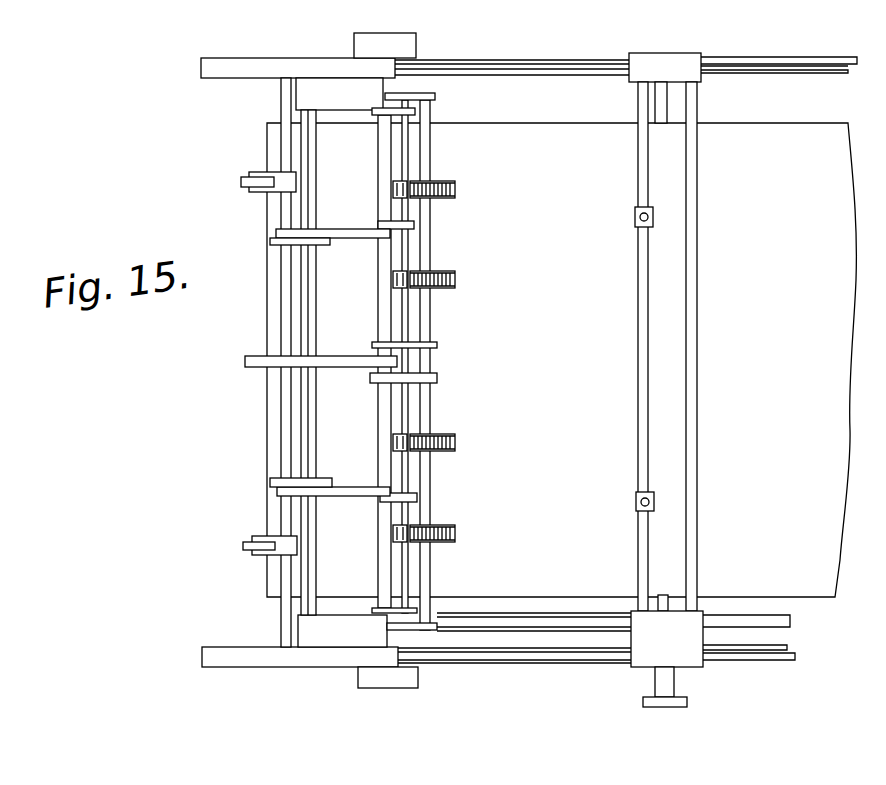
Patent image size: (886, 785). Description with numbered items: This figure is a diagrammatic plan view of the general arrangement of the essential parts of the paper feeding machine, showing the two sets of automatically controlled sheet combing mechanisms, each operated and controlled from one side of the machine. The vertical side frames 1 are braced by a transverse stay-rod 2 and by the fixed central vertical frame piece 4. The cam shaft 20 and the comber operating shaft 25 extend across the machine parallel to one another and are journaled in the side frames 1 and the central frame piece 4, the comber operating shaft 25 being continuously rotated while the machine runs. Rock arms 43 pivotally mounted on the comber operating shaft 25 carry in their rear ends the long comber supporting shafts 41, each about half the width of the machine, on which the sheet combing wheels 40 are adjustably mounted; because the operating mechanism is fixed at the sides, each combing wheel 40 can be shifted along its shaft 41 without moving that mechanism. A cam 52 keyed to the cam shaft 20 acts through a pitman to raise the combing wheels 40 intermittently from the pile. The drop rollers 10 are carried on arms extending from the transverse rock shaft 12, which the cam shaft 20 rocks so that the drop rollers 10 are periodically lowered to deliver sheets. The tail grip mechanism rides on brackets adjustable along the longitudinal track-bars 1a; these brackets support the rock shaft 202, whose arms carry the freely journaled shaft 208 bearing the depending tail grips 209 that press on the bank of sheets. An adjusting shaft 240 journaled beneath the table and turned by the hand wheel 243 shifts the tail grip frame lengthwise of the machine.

The vertical side frames 1 is at (238, 70).
The longitudinal track-bars 1a is at (626, 360).
The transverse stay-rod 2 is at (862, 436).
The fixed central vertical frame piece 4 is at (260, 363).
The drop rollers 10 is at (248, 186).
The transverse rock shaft 12 is at (288, 433).
The cam shaft 20 is at (310, 412).
The comber operating shaft 25 is at (385, 280).
The sheet combing wheels 40 is at (453, 192).
The comber supporting shafts 41 is at (427, 155).
The rock arms 43 is at (417, 98).
The cam 52 is at (318, 240).
The rock shaft 202 is at (697, 455).
The freely journaled shaft 208 is at (640, 386).
The tail grips 209 is at (635, 211).
The adjusting shaft 240 is at (663, 600).
The hand wheel 243 is at (671, 705).